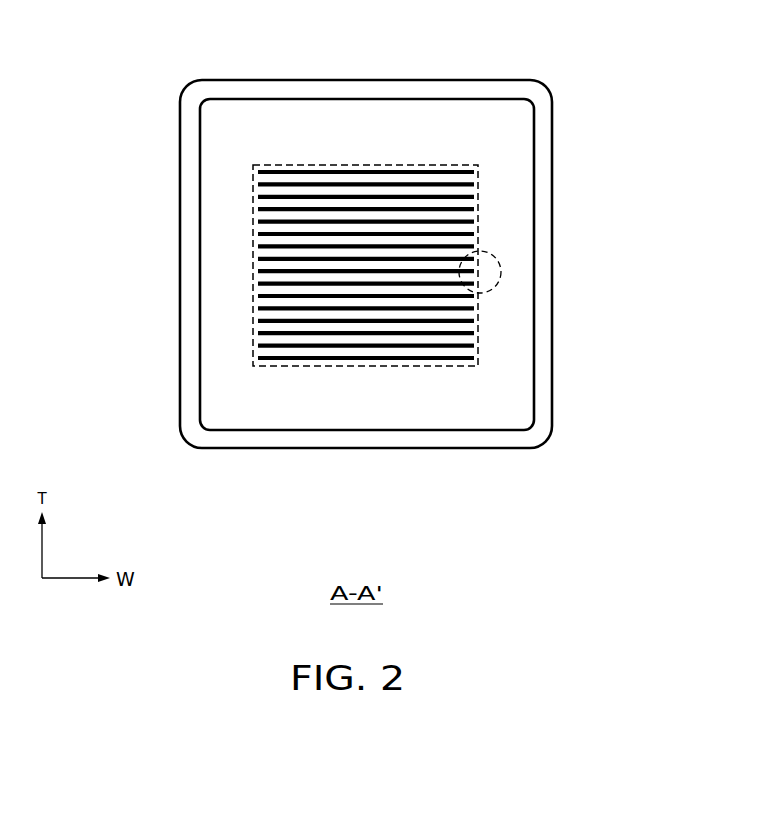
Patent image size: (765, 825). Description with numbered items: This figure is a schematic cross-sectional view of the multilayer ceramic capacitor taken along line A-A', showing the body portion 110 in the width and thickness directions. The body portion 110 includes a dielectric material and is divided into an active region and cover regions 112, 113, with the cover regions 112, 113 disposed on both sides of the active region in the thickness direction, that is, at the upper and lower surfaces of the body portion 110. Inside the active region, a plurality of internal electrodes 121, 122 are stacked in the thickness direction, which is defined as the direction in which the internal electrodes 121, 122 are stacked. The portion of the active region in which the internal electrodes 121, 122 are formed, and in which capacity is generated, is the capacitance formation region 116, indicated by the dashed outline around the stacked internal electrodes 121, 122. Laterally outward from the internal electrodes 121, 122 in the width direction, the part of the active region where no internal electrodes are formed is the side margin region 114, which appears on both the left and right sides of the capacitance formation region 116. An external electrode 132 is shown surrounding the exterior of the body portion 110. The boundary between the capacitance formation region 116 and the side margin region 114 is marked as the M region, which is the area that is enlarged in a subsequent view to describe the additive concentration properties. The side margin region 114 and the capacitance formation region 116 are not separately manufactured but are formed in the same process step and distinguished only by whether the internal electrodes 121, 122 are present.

The body portion 110 is at (472, 80).
The cover region 112 is at (433, 112).
The cover region 113 is at (400, 402).
The side margin region 114 is at (515, 205).
The capacitance formation region 116 is at (367, 150).
The internal electrode 121 is at (266, 170).
The internal electrode 122 is at (308, 182).
The external electrode 132 is at (545, 113).
The M region M is at (500, 272).